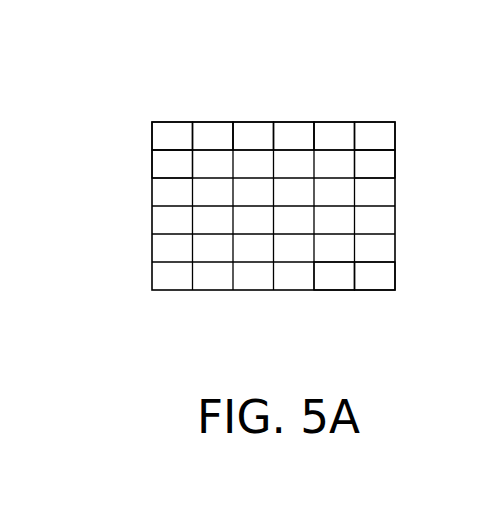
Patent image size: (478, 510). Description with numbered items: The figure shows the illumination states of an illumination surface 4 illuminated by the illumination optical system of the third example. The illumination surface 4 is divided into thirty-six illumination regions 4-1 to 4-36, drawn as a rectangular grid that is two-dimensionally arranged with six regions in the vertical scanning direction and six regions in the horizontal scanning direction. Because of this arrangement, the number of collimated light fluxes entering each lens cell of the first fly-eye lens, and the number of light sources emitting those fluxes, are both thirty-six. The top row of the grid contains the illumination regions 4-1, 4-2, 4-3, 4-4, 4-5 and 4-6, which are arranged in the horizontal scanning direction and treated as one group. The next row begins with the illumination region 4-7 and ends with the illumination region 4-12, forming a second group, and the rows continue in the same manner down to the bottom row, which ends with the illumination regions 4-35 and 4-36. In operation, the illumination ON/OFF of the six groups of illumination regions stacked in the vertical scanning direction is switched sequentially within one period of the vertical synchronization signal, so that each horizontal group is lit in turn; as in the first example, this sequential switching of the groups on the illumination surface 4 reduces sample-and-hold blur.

The illumination surface 4 is at (152, 135).
The illumination region 4-1 is at (173, 125).
The illumination region 4-2 is at (211, 122).
The illumination region 4-3 is at (249, 124).
The illumination region 4-4 is at (289, 122).
The illumination region 4-5 is at (333, 124).
The illumination region 4-6 is at (375, 123).
The illumination region 4-7 is at (160, 166).
The illumination region 4-12 is at (378, 166).
The illumination region 4-35 is at (338, 284).
The illumination region 4-36 is at (372, 284).